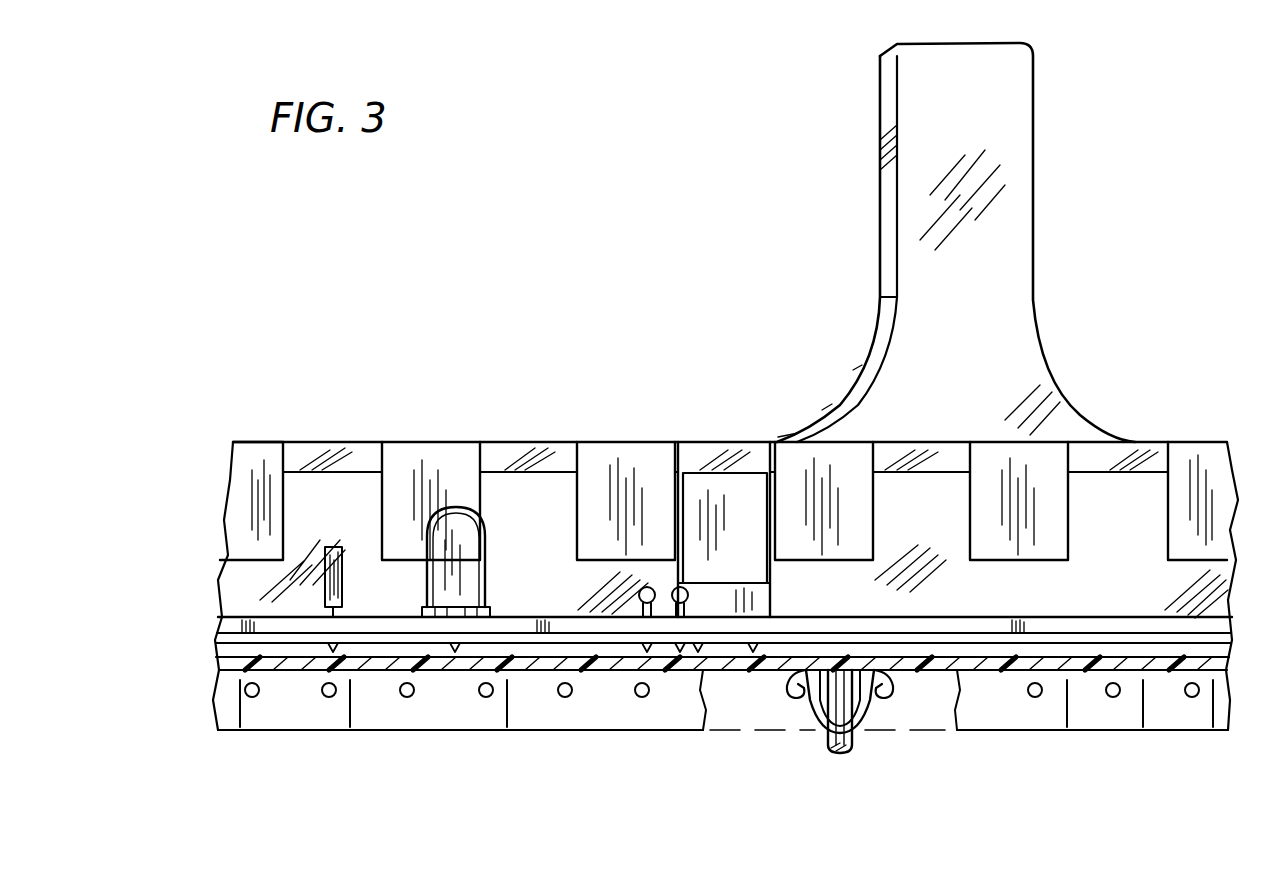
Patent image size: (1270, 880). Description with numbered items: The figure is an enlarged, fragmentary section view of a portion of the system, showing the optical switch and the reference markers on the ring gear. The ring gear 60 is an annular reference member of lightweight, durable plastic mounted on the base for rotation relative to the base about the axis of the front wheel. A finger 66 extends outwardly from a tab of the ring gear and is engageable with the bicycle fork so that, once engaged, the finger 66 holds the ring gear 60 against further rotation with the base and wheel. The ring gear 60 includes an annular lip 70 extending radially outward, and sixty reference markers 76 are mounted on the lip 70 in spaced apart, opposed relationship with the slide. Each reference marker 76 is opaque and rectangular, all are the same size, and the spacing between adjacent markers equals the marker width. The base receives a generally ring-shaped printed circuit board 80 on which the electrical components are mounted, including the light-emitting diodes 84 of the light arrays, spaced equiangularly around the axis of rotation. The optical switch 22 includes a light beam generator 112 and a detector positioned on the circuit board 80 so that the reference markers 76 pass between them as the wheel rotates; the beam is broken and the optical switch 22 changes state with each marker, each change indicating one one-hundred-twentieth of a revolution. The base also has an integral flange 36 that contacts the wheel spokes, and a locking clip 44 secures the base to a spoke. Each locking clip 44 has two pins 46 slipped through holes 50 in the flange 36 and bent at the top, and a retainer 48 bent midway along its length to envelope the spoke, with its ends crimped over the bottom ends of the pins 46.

The ring gear 60 is at (290, 418).
The finger 66 is at (880, 136).
The annular lip 70 is at (520, 442).
The reference markers 76 is at (398, 442).
The light beam generator 112 is at (690, 472).
The optical switch 22 is at (745, 482).
The light-emitting diodes 84 is at (427, 580).
The printed circuit board 80 is at (522, 625).
The holes 50 is at (571, 693).
The flange 36 is at (1085, 730).
The pins 46 is at (790, 700).
The retainer 48 is at (870, 705).
The locking clip 44 is at (858, 735).